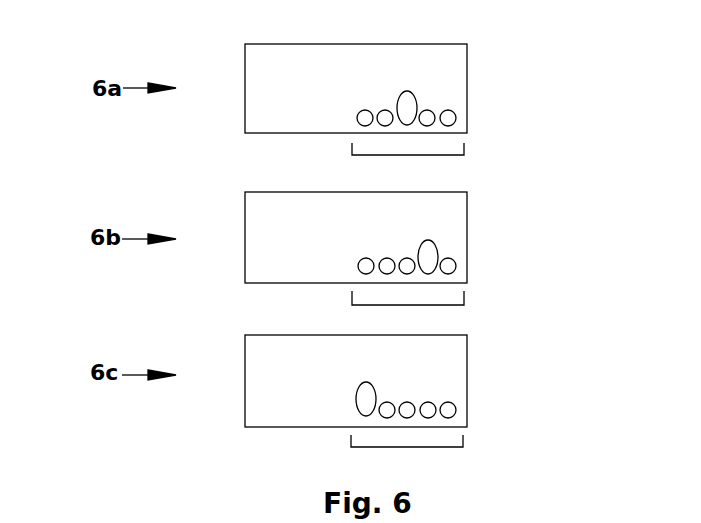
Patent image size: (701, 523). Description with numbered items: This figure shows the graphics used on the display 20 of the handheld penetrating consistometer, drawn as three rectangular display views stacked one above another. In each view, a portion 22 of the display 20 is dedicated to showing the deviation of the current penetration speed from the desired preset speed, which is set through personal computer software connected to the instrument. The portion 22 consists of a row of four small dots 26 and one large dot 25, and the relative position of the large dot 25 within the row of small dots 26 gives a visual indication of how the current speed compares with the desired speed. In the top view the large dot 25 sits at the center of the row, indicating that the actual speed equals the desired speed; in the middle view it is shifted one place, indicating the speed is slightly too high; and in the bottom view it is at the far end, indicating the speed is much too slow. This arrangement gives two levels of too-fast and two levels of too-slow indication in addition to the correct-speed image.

The display 20 is at (245, 88).
The portion of display 22 is at (413, 156).
The large dot 25 is at (405, 92).
The small dots 26 is at (452, 110).